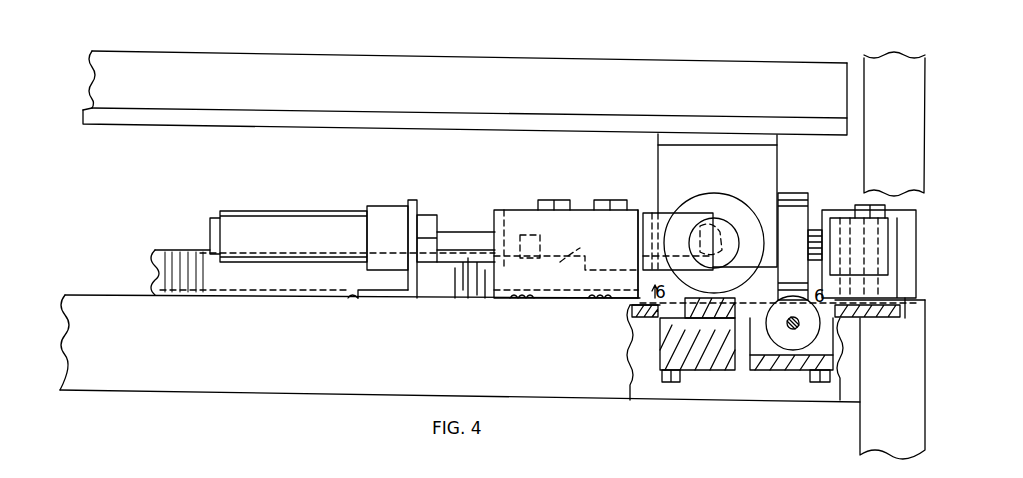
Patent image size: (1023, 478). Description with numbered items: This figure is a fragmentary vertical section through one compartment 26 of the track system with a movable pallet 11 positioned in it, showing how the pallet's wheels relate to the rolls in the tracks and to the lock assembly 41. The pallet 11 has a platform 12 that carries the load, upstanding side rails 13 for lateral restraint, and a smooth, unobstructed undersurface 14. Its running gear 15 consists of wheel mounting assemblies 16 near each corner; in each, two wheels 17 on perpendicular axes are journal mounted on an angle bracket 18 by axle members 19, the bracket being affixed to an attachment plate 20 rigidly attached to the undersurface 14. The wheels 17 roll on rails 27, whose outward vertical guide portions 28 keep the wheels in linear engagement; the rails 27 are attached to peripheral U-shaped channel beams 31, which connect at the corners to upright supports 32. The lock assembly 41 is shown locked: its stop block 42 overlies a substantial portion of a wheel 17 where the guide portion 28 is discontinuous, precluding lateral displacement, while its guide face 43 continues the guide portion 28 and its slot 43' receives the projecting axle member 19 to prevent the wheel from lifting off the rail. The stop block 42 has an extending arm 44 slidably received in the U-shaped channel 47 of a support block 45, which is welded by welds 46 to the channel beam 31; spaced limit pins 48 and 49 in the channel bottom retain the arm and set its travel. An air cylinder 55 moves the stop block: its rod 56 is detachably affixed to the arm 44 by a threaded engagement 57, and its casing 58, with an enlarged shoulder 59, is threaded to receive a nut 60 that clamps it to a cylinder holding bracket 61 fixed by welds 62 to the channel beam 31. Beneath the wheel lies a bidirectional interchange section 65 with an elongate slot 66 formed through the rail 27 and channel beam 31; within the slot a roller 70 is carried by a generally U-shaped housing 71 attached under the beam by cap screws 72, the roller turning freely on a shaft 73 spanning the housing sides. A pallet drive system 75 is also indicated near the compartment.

The movable pallet 11 is at (418, 54).
The platform 12 is at (82, 114).
The upstanding side rails 13 is at (144, 69).
The undersurface 14 is at (212, 126).
The running gear 15 is at (714, 110).
The wheel mounting assembly 16 is at (655, 160).
The wheel 17 is at (733, 208).
The angle bracket 18 is at (728, 160).
The axle member 19 is at (734, 240).
The attachment plate 20 is at (682, 133).
The compartment 26 is at (452, 276).
The rail 27 is at (160, 252).
The vertical guide portion 28 is at (612, 298).
The channel beam 31 is at (460, 348).
The upright support 32 is at (916, 100).
The lock assembly 41 is at (478, 186).
The stop block 42 is at (672, 226).
The guide face 43 is at (723, 228).
The slot 43' is at (761, 213).
The extending arm 44 is at (486, 210).
The support block 45 is at (560, 300).
The weld 46 is at (508, 302).
The U-shaped channel 47 is at (560, 262).
The limit pin 48 is at (552, 201).
The limit pin 49 is at (607, 201).
The air cylinder 55 is at (290, 206).
The rod 56 is at (462, 233).
The threaded engagement 57 is at (524, 231).
The casing 58 is at (230, 216).
The enlarged shoulder 59 is at (382, 209).
The nut 60 is at (428, 268).
The cylinder holding bracket 61 is at (398, 290).
The weld 62 is at (352, 296).
The bidirectional interchange section 65 is at (643, 343).
The elongate slot 66 is at (682, 308).
The roller 70 is at (700, 415).
The housing 71 is at (765, 365).
The cap screw 72 is at (668, 382).
The shaft 73 is at (662, 332).
The pallet drive system 75 is at (374, 477).